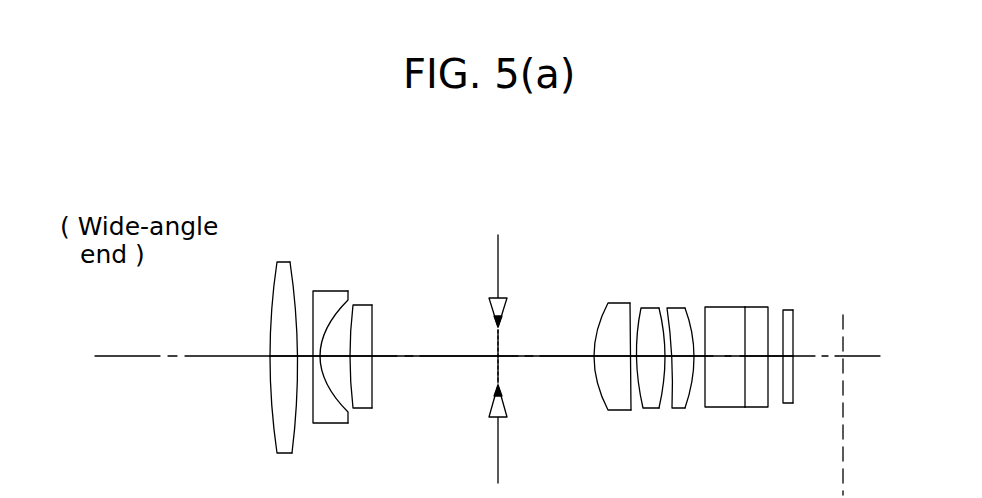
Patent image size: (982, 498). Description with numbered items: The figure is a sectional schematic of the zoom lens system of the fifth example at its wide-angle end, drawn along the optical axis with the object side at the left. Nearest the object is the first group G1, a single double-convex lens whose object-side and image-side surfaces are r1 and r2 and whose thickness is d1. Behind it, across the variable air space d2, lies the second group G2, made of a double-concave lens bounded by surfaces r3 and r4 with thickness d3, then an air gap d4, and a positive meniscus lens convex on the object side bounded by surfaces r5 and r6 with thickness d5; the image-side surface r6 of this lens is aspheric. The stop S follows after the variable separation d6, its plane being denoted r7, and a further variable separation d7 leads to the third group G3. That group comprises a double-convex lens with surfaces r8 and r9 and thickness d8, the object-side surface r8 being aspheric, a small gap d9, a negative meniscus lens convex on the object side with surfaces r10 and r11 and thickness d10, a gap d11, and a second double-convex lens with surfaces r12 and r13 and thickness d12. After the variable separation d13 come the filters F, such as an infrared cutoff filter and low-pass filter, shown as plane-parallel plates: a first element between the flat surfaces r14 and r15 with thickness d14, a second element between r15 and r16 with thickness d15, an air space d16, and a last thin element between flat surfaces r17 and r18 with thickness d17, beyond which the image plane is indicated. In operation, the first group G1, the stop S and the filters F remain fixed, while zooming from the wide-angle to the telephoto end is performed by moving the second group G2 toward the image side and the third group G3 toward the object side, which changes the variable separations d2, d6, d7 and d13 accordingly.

The first group G1 is at (300, 212).
The second group G2 is at (378, 212).
The third group G3 is at (690, 212).
The stop S is at (507, 212).
The filters F is at (799, 213).
The radius of curvature of first lens surface r1 is at (275, 277).
The radius of curvature of second lens surface r2 is at (293, 277).
The radius of curvature of third lens surface r3 is at (312, 300).
The radius of curvature of fourth lens surface r4 is at (330, 318).
The radius of curvature of fifth lens surface r5 is at (353, 320).
The radius of curvature of sixth lens surface r6 is at (372, 320).
The radius of curvature of stop surface r7 is at (496, 348).
The radius of curvature of eighth lens surface r8 is at (600, 320).
The radius of curvature of ninth lens surface r9 is at (630, 322).
The radius of curvature of tenth lens surface r10 is at (637, 325).
The radius of curvature of eleventh lens surface r11 is at (664, 325).
The radius of curvature of twelfth lens surface r12 is at (671, 325).
The radius of curvature of thirteenth lens surface r13 is at (692, 325).
The radius of curvature of fourteenth surface r14 is at (708, 325).
The radius of curvature of fifteenth surface r15 is at (744, 322).
The radius of curvature of sixteenth surface r16 is at (768, 322).
The radius of curvature of seventeenth surface r17 is at (783, 322).
The radius of curvature of eighteenth surface r18 is at (795, 322).
The separation between first and second lens surfaces d1 is at (285, 360).
The separation between second and third lens surfaces d2 is at (304, 360).
The separation between third and fourth lens surfaces d3 is at (320, 362).
The separation between fourth and fifth lens surfaces d4 is at (350, 362).
The separation between fifth and sixth lens surfaces d5 is at (375, 362).
The separation between sixth lens surface and stop d6 is at (433, 358).
The separation between stop and eighth lens surface d7 is at (550, 358).
The separation between eighth and ninth lens surfaces d8 is at (618, 360).
The separation between ninth and tenth lens surfaces d9 is at (633, 362).
The separation between tenth and eleventh lens surfaces d10 is at (650, 362).
The separation between eleventh and twelfth lens surfaces d11 is at (668, 362).
The separation between twelfth and thirteenth lens surfaces d12 is at (685, 362).
The separation between thirteenth and fourteenth surfaces d13 is at (700, 362).
The separation between fourteenth and fifteenth surfaces d14 is at (730, 358).
The separation between fifteenth and sixteenth surfaces d15 is at (757, 362).
The separation between sixteenth and seventeenth surfaces d16 is at (775, 362).
The separation between seventeenth and eighteenth surfaces d17 is at (789, 362).